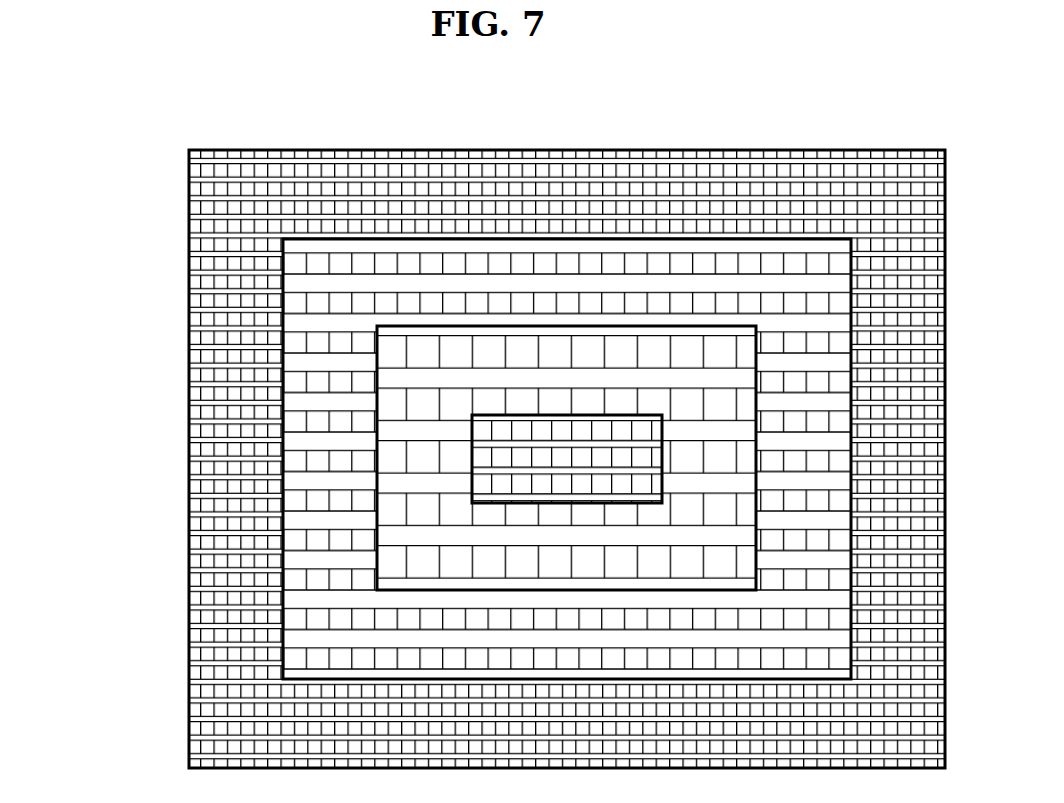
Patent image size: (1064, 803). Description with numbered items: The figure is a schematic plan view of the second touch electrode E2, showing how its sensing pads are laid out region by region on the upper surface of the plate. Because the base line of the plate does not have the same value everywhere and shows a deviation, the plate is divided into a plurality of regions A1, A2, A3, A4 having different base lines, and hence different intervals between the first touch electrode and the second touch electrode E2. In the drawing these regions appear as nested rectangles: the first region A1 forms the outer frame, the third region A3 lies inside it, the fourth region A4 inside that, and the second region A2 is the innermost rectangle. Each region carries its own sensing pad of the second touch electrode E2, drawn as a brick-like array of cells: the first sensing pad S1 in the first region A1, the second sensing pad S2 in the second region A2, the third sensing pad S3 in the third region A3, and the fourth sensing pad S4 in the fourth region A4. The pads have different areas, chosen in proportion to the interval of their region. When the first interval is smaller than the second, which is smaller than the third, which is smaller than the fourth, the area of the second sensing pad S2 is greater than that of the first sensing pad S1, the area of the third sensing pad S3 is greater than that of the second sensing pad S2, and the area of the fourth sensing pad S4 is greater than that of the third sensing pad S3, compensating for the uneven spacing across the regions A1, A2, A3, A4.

The second touch electrode E2 is at (487, 409).
The first region A1 is at (519, 409).
The second region A2 is at (383, 299).
The third region A3 is at (472, 365).
The fourth region A4 is at (424, 320).
The first sensing pad S1 is at (519, 409).
The second sensing pad S2 is at (502, 484).
The third sensing pad S3 is at (472, 365).
The fourth sensing pad S4 is at (424, 320).